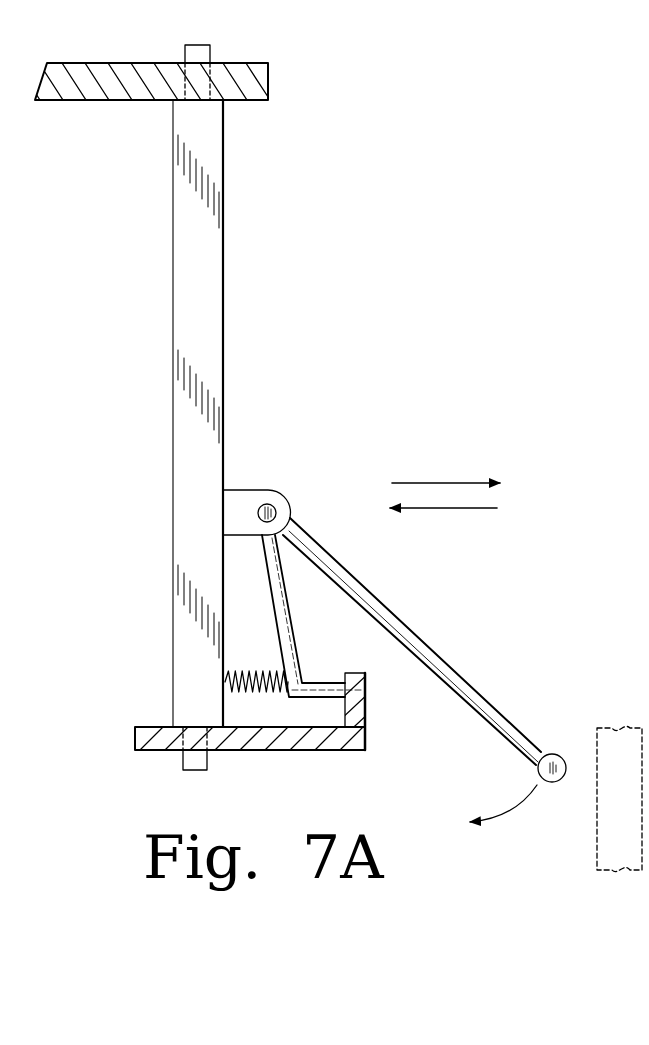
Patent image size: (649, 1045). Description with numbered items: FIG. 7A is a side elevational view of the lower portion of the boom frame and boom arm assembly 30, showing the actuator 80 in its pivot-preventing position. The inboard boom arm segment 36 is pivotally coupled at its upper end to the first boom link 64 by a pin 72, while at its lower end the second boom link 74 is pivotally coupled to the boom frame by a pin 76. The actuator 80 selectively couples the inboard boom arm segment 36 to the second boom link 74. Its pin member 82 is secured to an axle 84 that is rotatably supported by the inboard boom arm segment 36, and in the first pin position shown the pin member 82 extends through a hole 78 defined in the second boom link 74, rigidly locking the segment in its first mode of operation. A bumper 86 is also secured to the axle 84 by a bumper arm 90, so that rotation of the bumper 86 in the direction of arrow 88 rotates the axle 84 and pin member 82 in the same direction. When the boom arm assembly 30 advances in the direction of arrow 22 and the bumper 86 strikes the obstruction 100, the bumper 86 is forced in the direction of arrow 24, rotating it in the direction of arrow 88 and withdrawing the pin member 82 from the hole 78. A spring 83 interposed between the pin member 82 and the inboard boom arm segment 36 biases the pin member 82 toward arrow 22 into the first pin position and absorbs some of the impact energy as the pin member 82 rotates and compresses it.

The arrow 22 is at (453, 482).
The arrow 24 is at (440, 510).
The boom arm assembly 30 is at (183, 413).
The inboard boom arm segment 36 is at (212, 292).
The first boom link 64 is at (254, 78).
The pin 72 is at (210, 55).
The second boom link 74 is at (270, 746).
The pin 76 is at (183, 762).
The hole 78 is at (372, 712).
The actuator 80 is at (490, 667).
The pin member 82 is at (377, 690).
The spring 83 is at (258, 668).
The axle 84 is at (272, 506).
The bumper 86 is at (556, 755).
The arrow 88 is at (513, 813).
The bumper arm 90 is at (386, 612).
The obstruction 100 is at (620, 742).